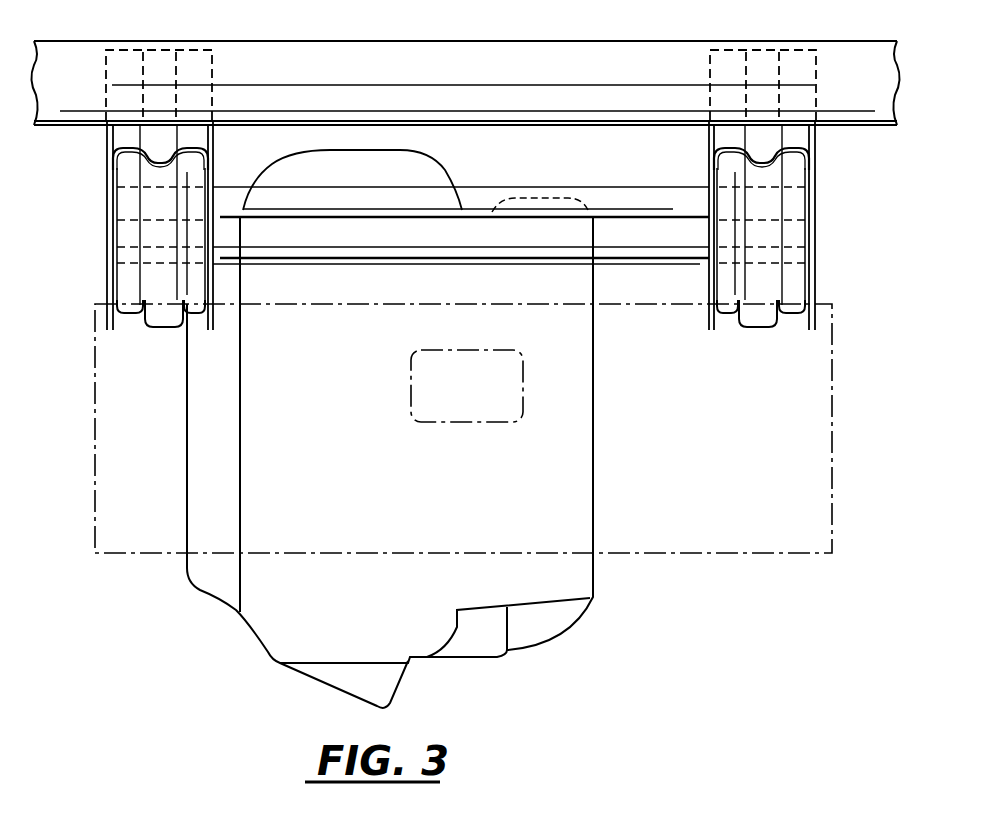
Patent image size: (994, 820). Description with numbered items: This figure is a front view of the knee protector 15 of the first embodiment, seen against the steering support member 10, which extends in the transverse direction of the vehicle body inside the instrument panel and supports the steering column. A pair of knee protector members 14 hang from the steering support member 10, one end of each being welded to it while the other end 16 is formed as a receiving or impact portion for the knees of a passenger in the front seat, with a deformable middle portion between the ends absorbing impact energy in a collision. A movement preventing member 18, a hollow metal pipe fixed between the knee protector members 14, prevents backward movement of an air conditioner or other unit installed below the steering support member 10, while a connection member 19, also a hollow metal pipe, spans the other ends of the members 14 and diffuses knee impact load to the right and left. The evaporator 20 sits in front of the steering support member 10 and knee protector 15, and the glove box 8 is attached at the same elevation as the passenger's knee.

The glove box 8 is at (832, 400).
The steering support member 10 is at (508, 51).
The knee protector member 14 is at (113, 135).
The knee protector 15 is at (851, 228).
The other end 16 is at (143, 282).
The movement preventing member 18 is at (618, 200).
The connection member 19 is at (627, 258).
The evaporator 20 is at (399, 169).